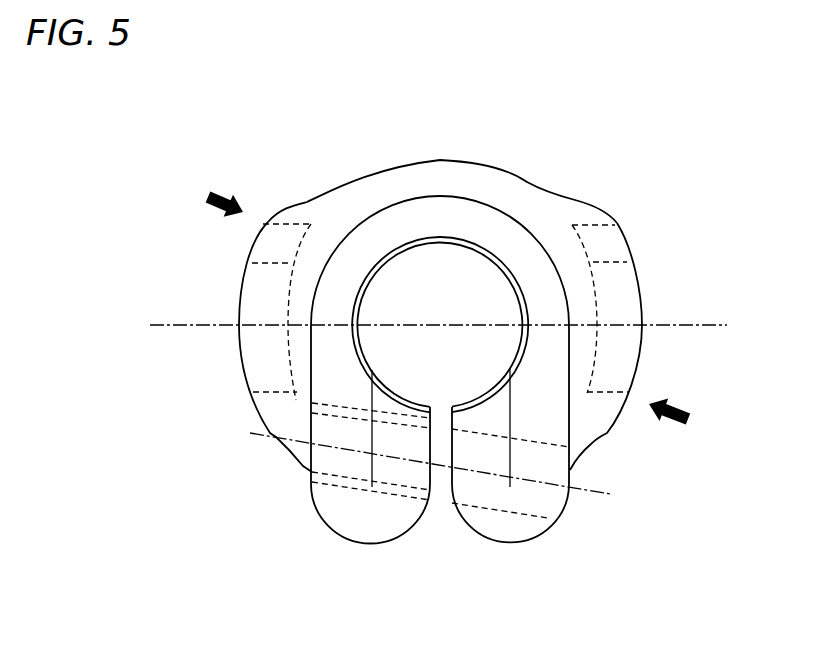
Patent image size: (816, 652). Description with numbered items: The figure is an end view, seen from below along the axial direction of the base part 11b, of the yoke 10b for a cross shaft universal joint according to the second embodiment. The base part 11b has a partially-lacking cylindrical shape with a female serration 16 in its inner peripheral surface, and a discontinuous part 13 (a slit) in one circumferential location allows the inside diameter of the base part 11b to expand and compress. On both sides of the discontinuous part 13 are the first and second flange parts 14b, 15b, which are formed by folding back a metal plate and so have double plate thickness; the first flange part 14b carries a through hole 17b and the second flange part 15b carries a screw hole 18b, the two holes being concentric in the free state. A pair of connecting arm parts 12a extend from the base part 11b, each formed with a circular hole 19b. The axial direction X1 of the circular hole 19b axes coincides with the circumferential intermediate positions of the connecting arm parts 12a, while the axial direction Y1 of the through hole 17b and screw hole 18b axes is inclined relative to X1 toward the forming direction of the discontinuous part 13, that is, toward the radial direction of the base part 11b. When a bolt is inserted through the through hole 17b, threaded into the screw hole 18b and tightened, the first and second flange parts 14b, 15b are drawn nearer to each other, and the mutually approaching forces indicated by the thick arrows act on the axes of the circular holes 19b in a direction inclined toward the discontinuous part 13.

The yoke 10b is at (600, 193).
The base part 11b is at (407, 220).
The connecting arm part 12a is at (252, 315).
The discontinuous part 13 is at (442, 490).
The first flange part 14b is at (507, 532).
The second flange part 15b is at (363, 527).
The female serration 16 is at (442, 243).
The through hole 17b is at (522, 518).
The screw hole 18b is at (335, 488).
The circular hole 19b is at (271, 391).
The axial direction of the axes of the circular holes X1 is at (667, 325).
The axial direction of the axes of the through hole and screw hole Y1 is at (604, 494).